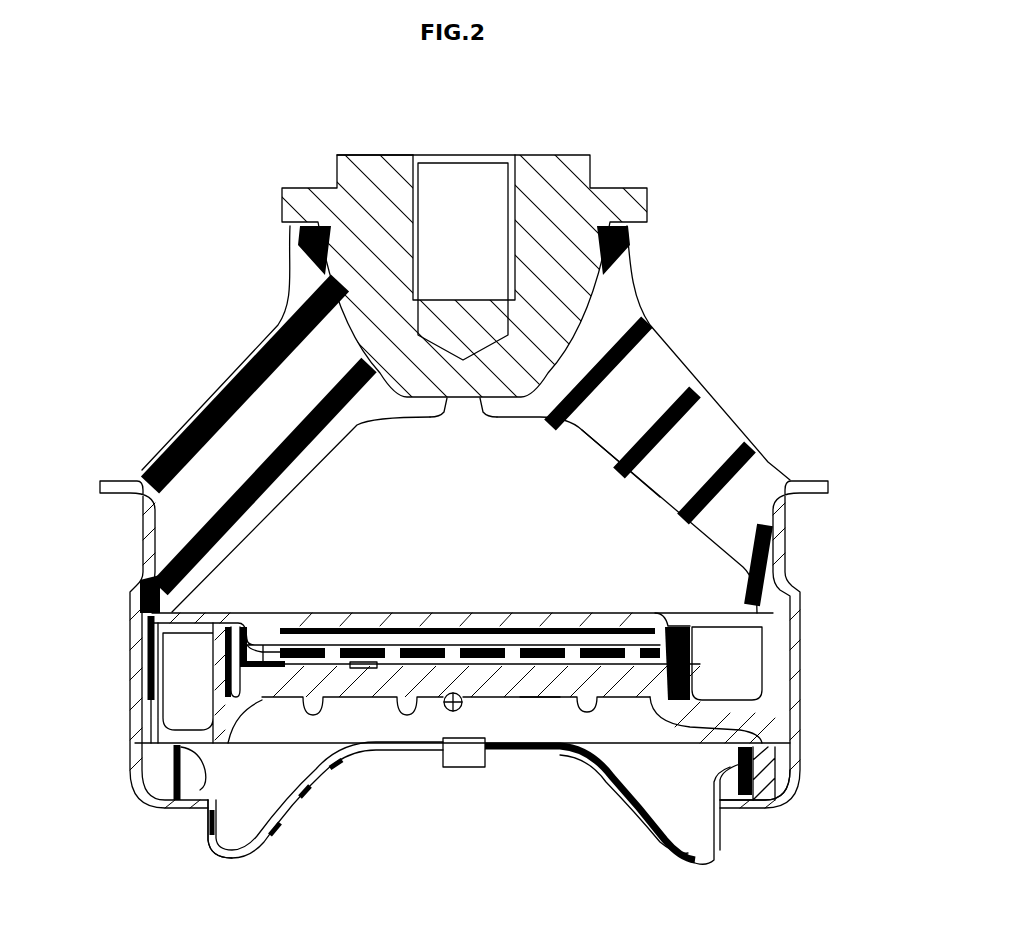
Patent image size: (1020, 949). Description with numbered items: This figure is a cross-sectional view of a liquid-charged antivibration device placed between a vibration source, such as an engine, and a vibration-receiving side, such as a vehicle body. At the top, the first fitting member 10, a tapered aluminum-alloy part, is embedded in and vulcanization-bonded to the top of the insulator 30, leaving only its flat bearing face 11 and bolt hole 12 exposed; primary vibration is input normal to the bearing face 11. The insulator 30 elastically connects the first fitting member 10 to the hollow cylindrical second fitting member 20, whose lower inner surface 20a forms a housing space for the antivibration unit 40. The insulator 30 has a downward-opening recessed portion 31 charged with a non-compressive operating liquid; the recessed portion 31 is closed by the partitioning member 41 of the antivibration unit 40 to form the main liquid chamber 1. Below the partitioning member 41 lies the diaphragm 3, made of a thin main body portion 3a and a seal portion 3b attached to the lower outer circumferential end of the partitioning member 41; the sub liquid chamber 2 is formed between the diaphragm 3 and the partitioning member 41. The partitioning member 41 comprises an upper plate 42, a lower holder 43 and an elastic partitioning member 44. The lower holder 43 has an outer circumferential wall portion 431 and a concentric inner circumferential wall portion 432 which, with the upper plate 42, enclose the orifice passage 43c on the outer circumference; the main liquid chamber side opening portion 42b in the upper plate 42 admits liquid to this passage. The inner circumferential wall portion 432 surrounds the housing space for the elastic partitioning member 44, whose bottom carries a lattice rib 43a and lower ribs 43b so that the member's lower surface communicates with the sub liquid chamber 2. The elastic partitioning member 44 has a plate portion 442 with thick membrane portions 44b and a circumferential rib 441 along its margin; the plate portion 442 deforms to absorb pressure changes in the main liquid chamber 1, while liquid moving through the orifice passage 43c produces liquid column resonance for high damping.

The main liquid chamber 1 is at (472, 518).
The sub liquid chamber 2 is at (254, 801).
The diaphragm 3 is at (302, 822).
The main body portion 3a is at (343, 768).
The seal portion 3b is at (200, 805).
The first fitting member 10 is at (586, 143).
The bearing face 11 is at (370, 155).
The bolt hole 12 is at (428, 183).
The second fitting member 20 is at (791, 573).
The inner surface 20a is at (800, 690).
The insulator 30 is at (687, 350).
The recessed portion 31 is at (590, 462).
The antivibration unit 40 is at (729, 839).
The partitioning member 41 is at (248, 601).
The upper plate 42 is at (668, 601).
The main liquid chamber side opening portion 42b is at (727, 620).
The lower holder 43 is at (622, 708).
The rib 43a is at (530, 690).
The lower ribs 43b is at (490, 705).
The orifice passage 43c is at (168, 647).
The outer circumferential wall portion 431 is at (217, 680).
The inner circumferential wall portion 432 is at (168, 735).
The elastic partitioning member 44 is at (549, 651).
The thick membrane portions 44b is at (330, 627).
The circumferential rib 441 is at (258, 622).
The plate portion 442 is at (365, 655).